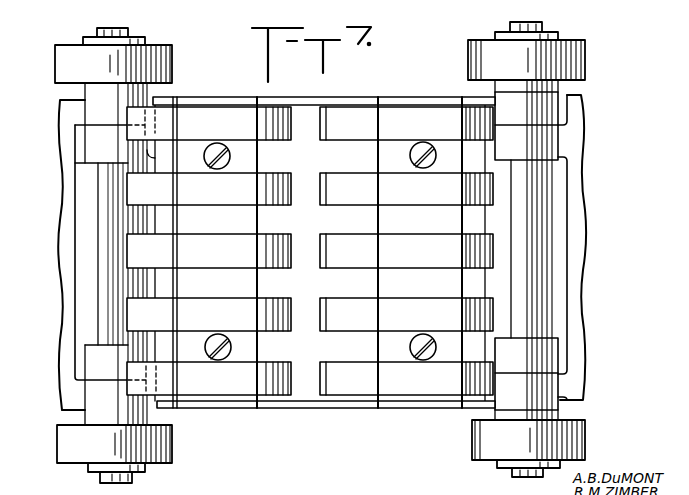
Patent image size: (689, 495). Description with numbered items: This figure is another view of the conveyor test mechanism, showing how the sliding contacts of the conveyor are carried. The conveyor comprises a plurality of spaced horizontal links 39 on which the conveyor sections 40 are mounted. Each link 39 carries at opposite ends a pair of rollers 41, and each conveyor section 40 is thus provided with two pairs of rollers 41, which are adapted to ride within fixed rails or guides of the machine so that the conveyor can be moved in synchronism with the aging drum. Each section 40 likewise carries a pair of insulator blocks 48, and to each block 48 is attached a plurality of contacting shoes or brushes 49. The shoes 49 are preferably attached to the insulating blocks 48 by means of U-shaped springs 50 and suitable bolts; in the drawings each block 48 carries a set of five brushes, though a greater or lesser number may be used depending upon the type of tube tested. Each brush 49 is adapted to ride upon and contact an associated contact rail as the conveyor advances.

The horizontal link 39 is at (110, 233).
The conveyor section 40 is at (358, 99).
The roller 41 is at (172, 66).
The insulator block 48 is at (378, 153).
The contacting shoe 49 is at (322, 309).
The U-shaped spring 50 is at (292, 198).